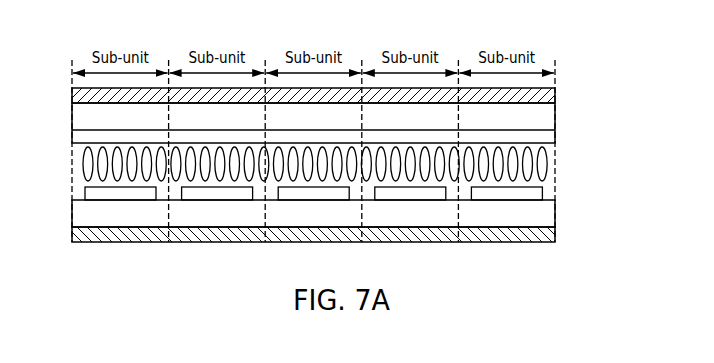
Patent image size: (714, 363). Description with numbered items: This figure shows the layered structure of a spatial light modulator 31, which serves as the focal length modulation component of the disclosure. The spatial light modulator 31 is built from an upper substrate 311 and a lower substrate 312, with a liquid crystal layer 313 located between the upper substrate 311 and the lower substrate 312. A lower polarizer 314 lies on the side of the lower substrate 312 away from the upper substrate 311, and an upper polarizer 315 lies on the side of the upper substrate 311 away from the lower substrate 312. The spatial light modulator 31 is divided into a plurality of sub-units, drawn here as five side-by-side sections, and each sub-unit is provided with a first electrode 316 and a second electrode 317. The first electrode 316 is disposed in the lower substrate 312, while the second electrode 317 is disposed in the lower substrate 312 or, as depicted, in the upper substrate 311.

The spatial light modulator 31 is at (97, 27).
The upper substrate 311 is at (70, 103).
The lower substrate 312 is at (70, 187).
The liquid crystal layer 313 is at (548, 163).
The lower polarizer 314 is at (532, 230).
The upper polarizer 315 is at (532, 97).
The first electrode 316 is at (528, 190).
The second electrode 317 is at (527, 137).